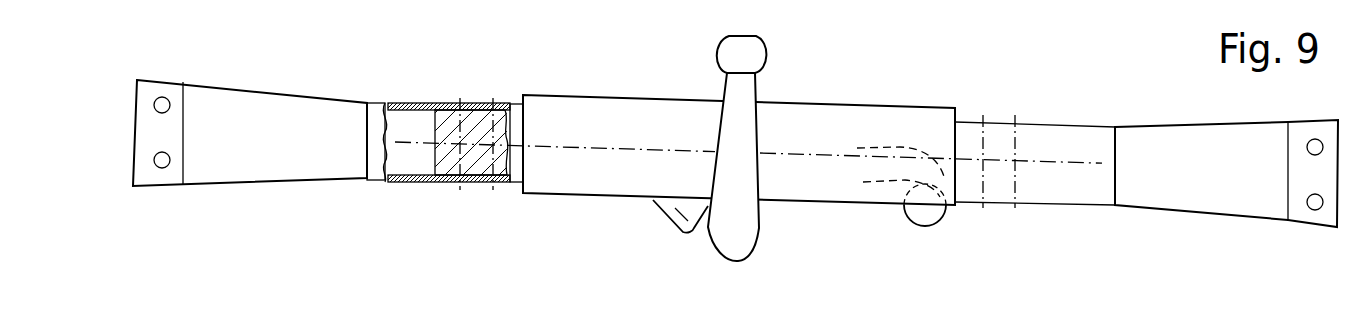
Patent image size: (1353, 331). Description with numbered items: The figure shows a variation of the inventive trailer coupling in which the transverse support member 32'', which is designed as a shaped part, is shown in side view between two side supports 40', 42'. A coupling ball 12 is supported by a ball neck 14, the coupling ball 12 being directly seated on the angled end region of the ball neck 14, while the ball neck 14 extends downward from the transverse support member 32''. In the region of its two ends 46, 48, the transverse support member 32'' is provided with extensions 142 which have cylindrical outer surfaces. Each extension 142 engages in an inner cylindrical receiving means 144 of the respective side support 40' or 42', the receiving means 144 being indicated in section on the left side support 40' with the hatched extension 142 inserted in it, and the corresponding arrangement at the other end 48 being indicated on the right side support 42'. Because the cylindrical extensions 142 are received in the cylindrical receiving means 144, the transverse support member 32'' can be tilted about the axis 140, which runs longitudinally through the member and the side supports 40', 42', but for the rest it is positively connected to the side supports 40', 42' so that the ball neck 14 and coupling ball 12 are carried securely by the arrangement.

The coupling ball 12 is at (737, 43).
The ball neck 14 is at (743, 172).
The transverse support member 32'' is at (739, 125).
The side support 40' is at (250, 168).
The side support 42' is at (1226, 205).
The end of the transverse support member 46 is at (532, 182).
The end of the transverse support member 48 is at (958, 180).
The axis 140 is at (550, 145).
The extension 142 is at (452, 162).
The inner cylindrical receiving means 144 is at (410, 165).